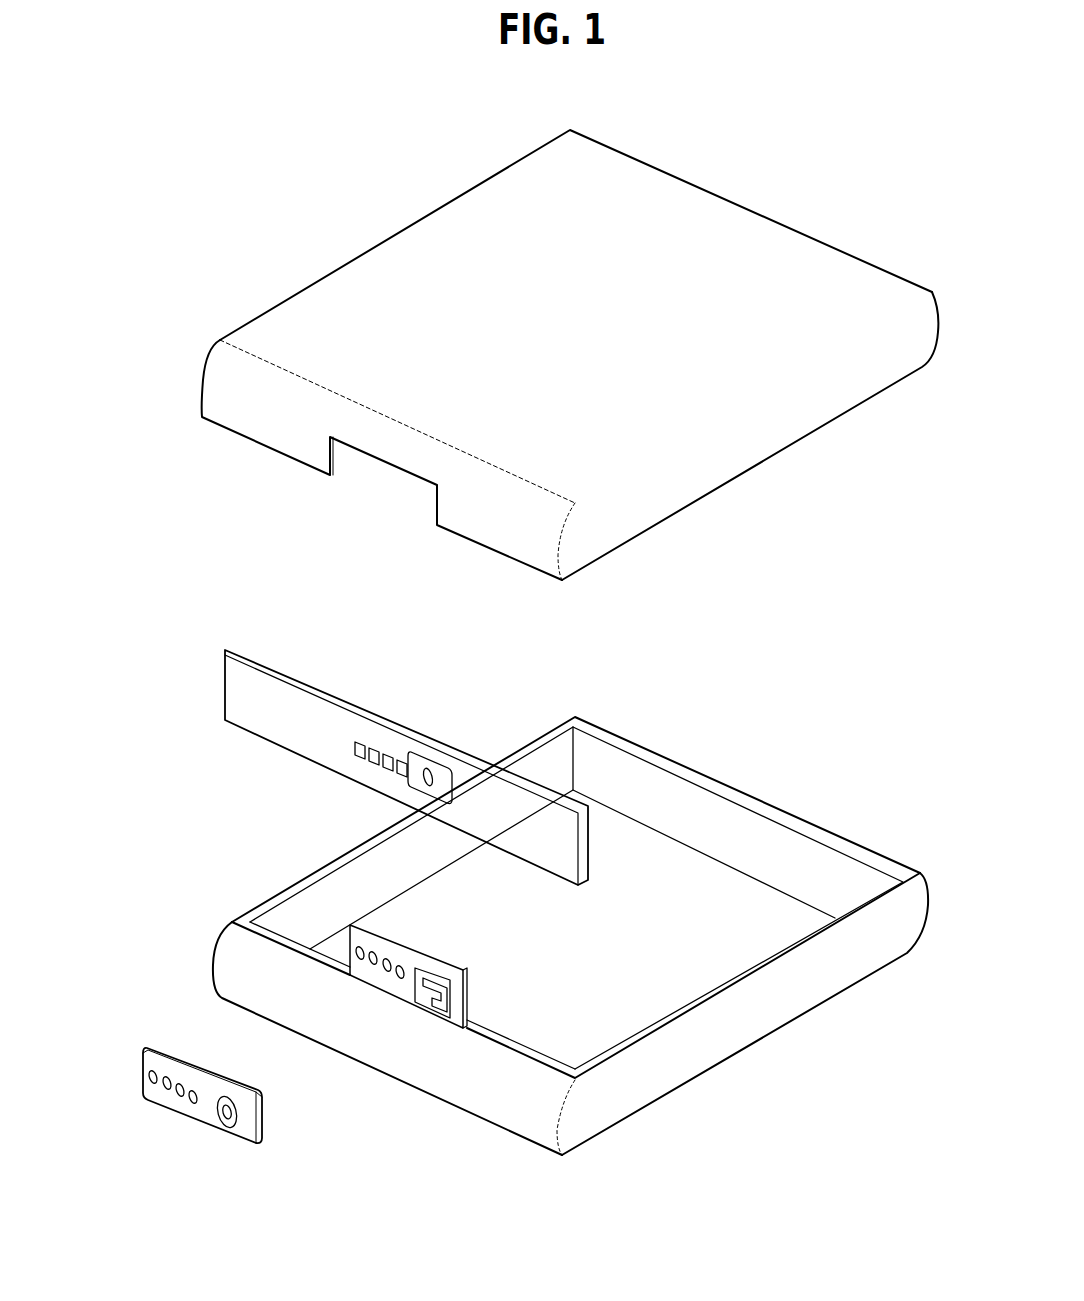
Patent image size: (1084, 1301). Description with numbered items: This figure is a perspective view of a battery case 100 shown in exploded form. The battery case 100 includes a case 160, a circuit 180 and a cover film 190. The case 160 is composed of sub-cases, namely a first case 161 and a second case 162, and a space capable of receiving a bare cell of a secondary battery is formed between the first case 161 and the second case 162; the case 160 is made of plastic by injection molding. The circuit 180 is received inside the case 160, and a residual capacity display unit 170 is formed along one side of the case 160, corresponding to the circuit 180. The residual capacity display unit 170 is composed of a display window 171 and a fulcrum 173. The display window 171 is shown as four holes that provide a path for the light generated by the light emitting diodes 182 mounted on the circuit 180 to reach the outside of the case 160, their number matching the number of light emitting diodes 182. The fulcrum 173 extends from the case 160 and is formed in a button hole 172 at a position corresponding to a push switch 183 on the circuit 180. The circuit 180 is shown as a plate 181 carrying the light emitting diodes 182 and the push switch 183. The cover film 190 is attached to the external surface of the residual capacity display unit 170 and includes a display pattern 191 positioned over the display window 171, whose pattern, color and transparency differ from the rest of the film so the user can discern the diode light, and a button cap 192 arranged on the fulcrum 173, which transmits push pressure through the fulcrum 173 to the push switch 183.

The battery case 100 is at (899, 92).
The case 160 is at (822, 535).
The first case 161 is at (768, 458).
The second case 162 is at (753, 790).
The residual capacity display unit 170 is at (485, 968).
The display window 171 is at (370, 972).
The button hole 172 is at (452, 998).
The fulcrum 173 is at (421, 1006).
The circuit 180 is at (205, 685).
The panel plate 181 is at (266, 680).
The light emitting diodes 182 is at (358, 738).
The push switch 183 is at (428, 752).
The cover film 190 is at (125, 1073).
The display pattern 191 is at (163, 1090).
The button cap 192 is at (220, 1135).